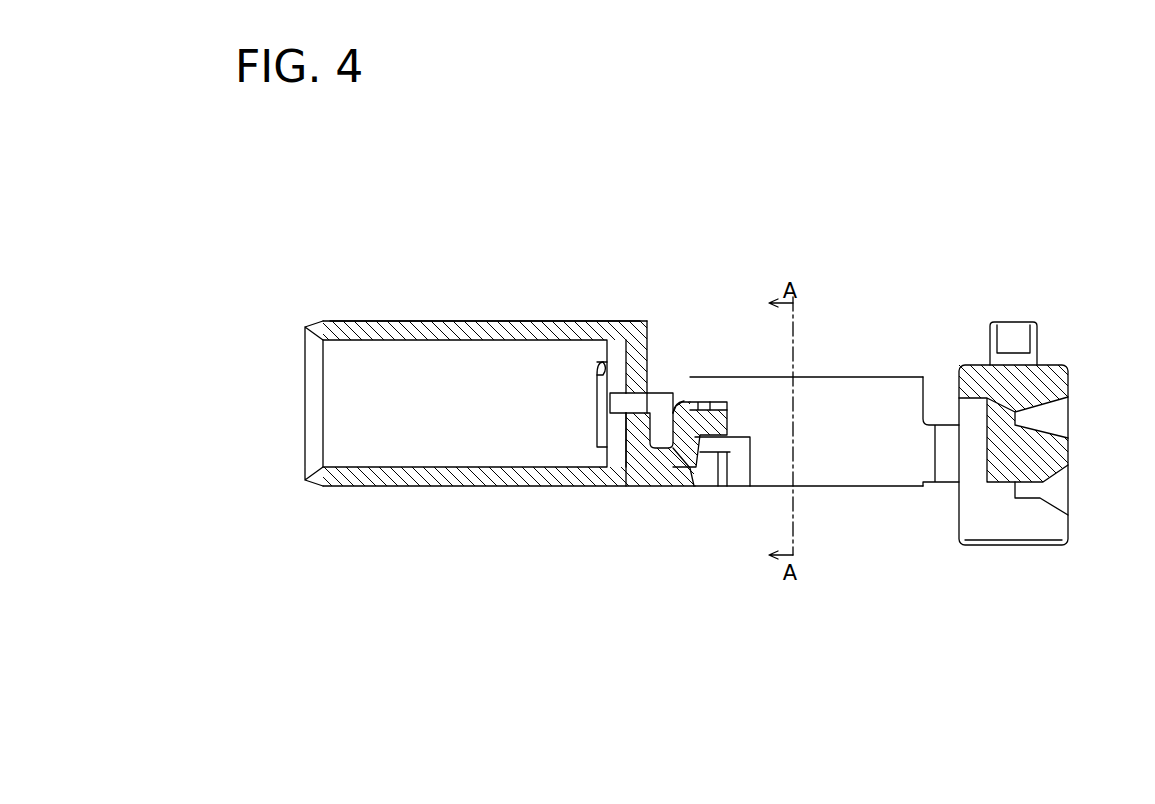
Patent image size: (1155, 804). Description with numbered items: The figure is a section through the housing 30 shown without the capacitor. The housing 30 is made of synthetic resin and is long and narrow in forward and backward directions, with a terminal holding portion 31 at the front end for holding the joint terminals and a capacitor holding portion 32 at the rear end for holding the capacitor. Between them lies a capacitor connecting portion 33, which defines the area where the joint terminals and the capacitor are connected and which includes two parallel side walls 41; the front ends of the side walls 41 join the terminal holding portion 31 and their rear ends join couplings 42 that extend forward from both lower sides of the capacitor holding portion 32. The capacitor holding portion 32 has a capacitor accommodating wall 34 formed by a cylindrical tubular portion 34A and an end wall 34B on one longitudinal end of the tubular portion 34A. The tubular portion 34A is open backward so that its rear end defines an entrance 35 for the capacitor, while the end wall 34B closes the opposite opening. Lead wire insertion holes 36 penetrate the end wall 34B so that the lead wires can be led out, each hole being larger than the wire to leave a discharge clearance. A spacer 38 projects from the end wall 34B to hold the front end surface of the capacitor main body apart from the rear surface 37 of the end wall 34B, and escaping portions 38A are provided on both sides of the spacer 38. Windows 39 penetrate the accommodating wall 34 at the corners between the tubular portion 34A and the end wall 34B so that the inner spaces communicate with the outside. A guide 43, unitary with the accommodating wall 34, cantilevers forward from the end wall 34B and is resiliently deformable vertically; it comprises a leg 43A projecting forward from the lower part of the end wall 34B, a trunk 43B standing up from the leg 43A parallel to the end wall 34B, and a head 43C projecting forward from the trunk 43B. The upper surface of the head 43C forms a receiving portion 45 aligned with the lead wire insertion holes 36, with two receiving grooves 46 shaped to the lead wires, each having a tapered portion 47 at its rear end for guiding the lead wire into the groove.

The housing 30 is at (613, 138).
The terminal holding portion 31 is at (1053, 387).
The capacitor holding portion 32 is at (382, 327).
The capacitor connecting portion 33 is at (849, 390).
The capacitor accommodating wall 34 is at (580, 208).
The tubular portion 34A is at (497, 326).
The end wall 34B is at (627, 358).
The entrance 35 is at (315, 437).
The lead wire insertion hole 36 is at (662, 443).
The rear surface of the end wall 37 is at (625, 447).
The spacer 38 is at (612, 380).
The escaping portion 38A is at (612, 402).
The window 39 is at (600, 366).
The side wall 41 is at (903, 390).
The coupling 42 is at (668, 392).
The guide 43 is at (765, 645).
The leg 43A is at (656, 465).
The trunk 43B is at (699, 440).
The head 43C is at (733, 438).
The receiving portion 45 is at (706, 400).
The receiving groove 46 is at (719, 400).
The tapered portion 47 is at (676, 392).